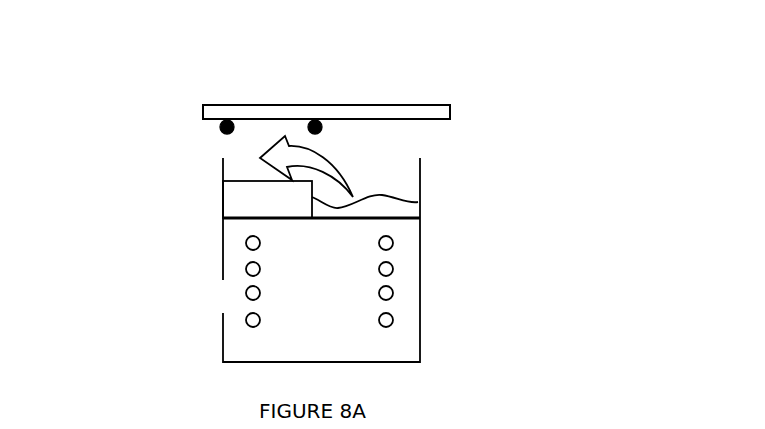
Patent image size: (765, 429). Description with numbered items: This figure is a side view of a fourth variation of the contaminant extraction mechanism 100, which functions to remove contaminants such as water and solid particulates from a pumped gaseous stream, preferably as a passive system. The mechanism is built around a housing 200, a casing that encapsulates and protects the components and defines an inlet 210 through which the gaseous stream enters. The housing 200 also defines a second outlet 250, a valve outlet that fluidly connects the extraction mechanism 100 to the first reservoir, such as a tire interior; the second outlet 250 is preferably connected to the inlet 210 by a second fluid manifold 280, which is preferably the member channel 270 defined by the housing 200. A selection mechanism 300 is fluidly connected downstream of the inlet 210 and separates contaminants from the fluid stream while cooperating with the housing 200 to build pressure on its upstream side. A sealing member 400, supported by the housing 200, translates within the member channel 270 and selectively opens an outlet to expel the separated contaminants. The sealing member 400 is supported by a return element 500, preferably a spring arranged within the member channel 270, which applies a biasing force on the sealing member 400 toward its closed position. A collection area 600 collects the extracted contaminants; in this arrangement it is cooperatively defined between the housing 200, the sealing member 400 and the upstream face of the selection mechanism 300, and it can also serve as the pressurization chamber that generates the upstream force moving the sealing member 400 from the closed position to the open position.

The contaminant extraction mechanism 100 is at (143, 90).
The housing 200 is at (272, 112).
The inlet 210 is at (423, 136).
The second outlet 250 is at (213, 297).
The member channel 270 is at (331, 281).
The second fluid manifold 280 is at (407, 277).
The selection mechanism 300 is at (232, 218).
The sealing member 400 is at (265, 193).
The return element 500 is at (246, 267).
The collection area 600 is at (397, 204).